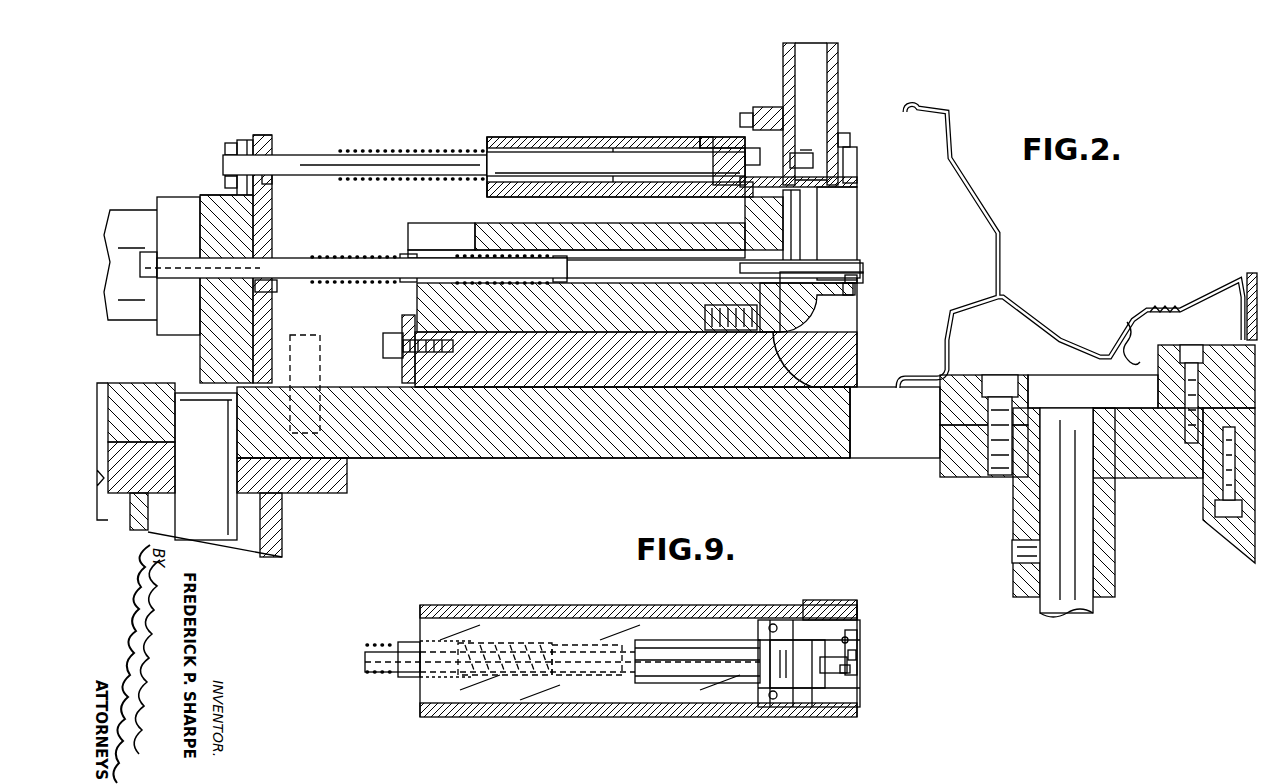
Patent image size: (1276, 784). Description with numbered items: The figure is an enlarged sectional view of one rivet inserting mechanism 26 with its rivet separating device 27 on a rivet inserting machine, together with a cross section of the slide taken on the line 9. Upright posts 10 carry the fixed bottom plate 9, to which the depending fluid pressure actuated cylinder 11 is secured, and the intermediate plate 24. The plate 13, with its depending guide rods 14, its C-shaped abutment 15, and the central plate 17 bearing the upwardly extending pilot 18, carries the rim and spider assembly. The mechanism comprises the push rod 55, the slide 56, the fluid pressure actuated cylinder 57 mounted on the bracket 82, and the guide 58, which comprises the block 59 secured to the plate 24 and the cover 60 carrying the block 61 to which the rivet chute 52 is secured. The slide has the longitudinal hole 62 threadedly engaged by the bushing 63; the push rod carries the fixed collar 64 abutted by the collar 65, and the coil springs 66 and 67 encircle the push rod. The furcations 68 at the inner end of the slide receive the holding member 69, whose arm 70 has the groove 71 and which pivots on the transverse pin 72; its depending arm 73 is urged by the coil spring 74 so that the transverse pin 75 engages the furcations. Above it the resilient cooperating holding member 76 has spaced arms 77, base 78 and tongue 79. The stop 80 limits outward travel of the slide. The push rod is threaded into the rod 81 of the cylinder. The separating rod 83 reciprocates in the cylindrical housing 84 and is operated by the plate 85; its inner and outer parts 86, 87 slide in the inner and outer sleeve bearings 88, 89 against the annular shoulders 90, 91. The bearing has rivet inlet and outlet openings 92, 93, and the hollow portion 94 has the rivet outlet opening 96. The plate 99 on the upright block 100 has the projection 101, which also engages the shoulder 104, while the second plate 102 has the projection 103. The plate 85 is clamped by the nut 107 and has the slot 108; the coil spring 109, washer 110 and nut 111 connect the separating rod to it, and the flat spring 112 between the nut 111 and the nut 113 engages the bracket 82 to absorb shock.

In FIG. 2, the bottom plate 9 is at (401, 238).
In FIG. 2, the upright posts 10 is at (866, 64).
In FIG. 2, the fluid pressure actuated cylinder 11 is at (816, 102).
In FIG. 2, the plate 13 is at (1158, 470).
In FIG. 2, the guide rods 14 is at (1048, 604).
In FIG. 2, the C-shaped abutment 15 is at (960, 385).
In FIG. 2, the central plate 17 is at (1165, 304).
In FIG. 2, the pilot 18 is at (1240, 290).
In FIG. 2, the intermediate plate 24 is at (812, 458).
In FIG. 2, the rivet inserting mechanism 26 is at (404, 301).
In FIG. 2, the rivet separating device 27 is at (480, 131).
In FIG. 2, the rivet chute 52 is at (783, 70).
In FIG. 2, the push rod 55 is at (300, 258).
In FIG. 2, the slide 56 is at (410, 310).
In FIG. 9, the slide 56 is at (612, 717).
In FIG. 2, the fluid pressure actuated cylinder 57 is at (129, 215).
In FIG. 2, the guide 58 is at (498, 398).
In FIG. 2, the block 59 is at (628, 375).
In FIG. 2, the cover 60 is at (441, 223).
In FIG. 2, the block 61 is at (745, 210).
In FIG. 2, the longitudinal hole 62 is at (485, 224).
In FIG. 2, the bushing 63 is at (404, 254).
In FIG. 9, the bushing 63 is at (410, 642).
In FIG. 2, the fixed collar 64 is at (585, 262).
In FIG. 9, the fixed collar 64 is at (572, 645).
In FIG. 2, the collar 65 is at (558, 256).
In FIG. 2, the coil spring 66 is at (500, 255).
In FIG. 9, the coil spring 66 is at (512, 640).
In FIG. 2, the coil spring 67 is at (352, 256).
In FIG. 9, the coil spring 67 is at (378, 640).
In FIG. 2, the furcations 68 is at (820, 317).
In FIG. 9, the furcations 68 is at (828, 657).
In FIG. 2, the holding member 69 is at (867, 297).
In FIG. 9, the holding member 69 is at (866, 659).
In FIG. 2, the arm 70 is at (825, 263).
In FIG. 9, the arm 70 is at (812, 675).
In FIG. 2, the groove 71 is at (835, 258).
In FIG. 9, the groove 71 is at (795, 655).
In FIG. 2, the transverse pin 72 is at (775, 283).
In FIG. 9, the transverse pin 72 is at (762, 620).
In FIG. 2, the depending arm 73 is at (817, 390).
In FIG. 2, the coil spring 74 is at (727, 330).
In FIG. 2, the transverse pin 75 is at (863, 278).
In FIG. 9, the transverse pin 75 is at (857, 637).
In FIG. 2, the cooperating holding member 76 is at (855, 272).
In FIG. 9, the spaced arms 77 is at (793, 700).
In FIG. 9, the base 78 is at (850, 671).
In FIG. 9, the tongue 79 is at (838, 648).
In FIG. 2, the stop 80 is at (402, 368).
In FIG. 2, the rod 81 is at (205, 262).
In FIG. 2, the bracket 82 is at (215, 195).
In FIG. 2, the separating rod 83 is at (309, 146).
In FIG. 2, the cylindrical housing 84 is at (588, 137).
In FIG. 2, the plate 85 is at (262, 135).
In FIG. 2, the inner cylindrical part 86 is at (640, 152).
In FIG. 2, the outer cylindrical part 87 is at (328, 155).
In FIG. 2, the inner sleeve bearing 88 is at (725, 148).
In FIG. 2, the outer sleeve bearing 89 is at (527, 137).
In FIG. 2, the annular shoulder 90 is at (707, 137).
In FIG. 2, the annular shoulder 91 is at (612, 148).
In FIG. 2, the rivet inlet opening 92 is at (905, 112).
In FIG. 2, the rivet outlet opening 93 is at (857, 182).
In FIG. 2, the hollow portion 94 is at (857, 160).
In FIG. 2, the rivet outlet opening 96 is at (745, 158).
In FIG. 2, the plate 99 is at (777, 107).
In FIG. 2, the upright block 100 is at (750, 107).
In FIG. 2, the projection 101 is at (805, 150).
In FIG. 2, the second plate 102 is at (845, 134).
In FIG. 2, the projection 103 is at (800, 168).
In FIG. 2, the shoulder 104 is at (705, 137).
In FIG. 2, the nut 107 is at (268, 292).
In FIG. 2, the slot 108 is at (270, 135).
In FIG. 2, the coil spring 109 is at (398, 147).
In FIG. 2, the washer 110 is at (272, 178).
In FIG. 2, the nut 111 is at (244, 140).
In FIG. 2, the flat spring 112 is at (195, 193).
In FIG. 2, the nut 113 is at (228, 143).